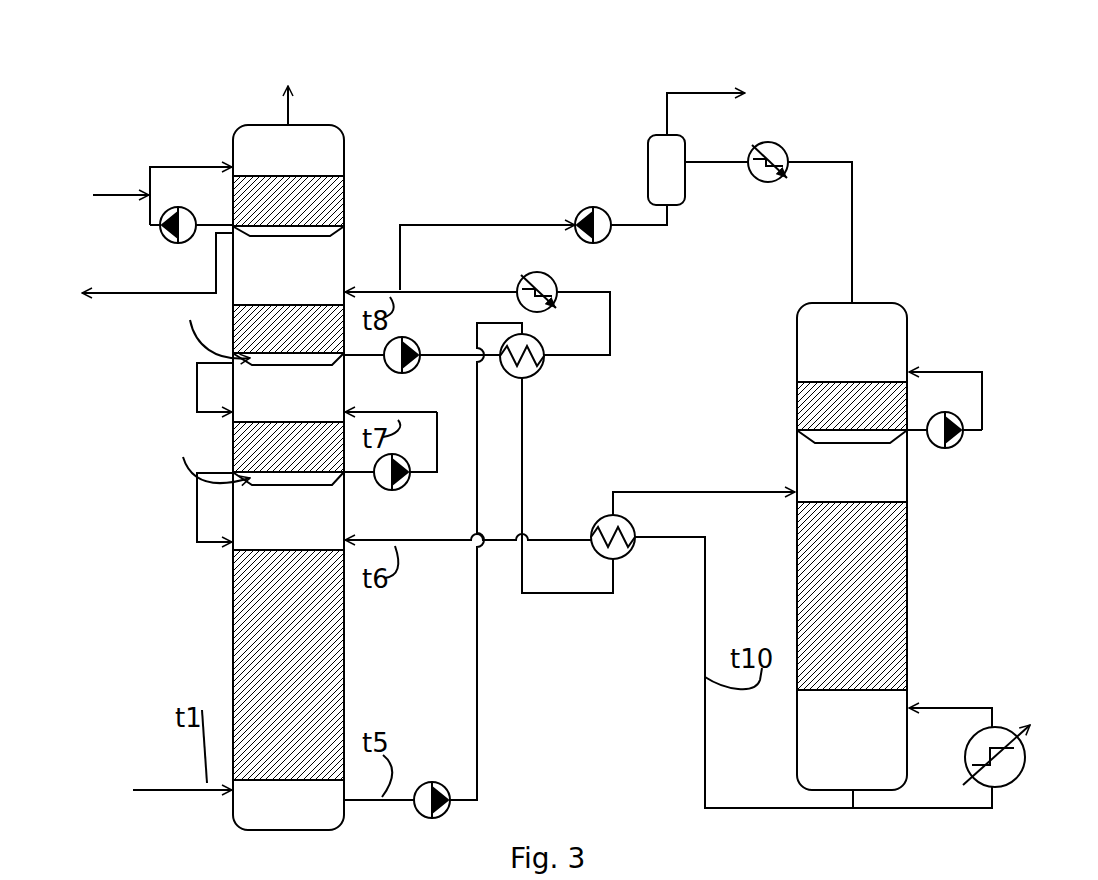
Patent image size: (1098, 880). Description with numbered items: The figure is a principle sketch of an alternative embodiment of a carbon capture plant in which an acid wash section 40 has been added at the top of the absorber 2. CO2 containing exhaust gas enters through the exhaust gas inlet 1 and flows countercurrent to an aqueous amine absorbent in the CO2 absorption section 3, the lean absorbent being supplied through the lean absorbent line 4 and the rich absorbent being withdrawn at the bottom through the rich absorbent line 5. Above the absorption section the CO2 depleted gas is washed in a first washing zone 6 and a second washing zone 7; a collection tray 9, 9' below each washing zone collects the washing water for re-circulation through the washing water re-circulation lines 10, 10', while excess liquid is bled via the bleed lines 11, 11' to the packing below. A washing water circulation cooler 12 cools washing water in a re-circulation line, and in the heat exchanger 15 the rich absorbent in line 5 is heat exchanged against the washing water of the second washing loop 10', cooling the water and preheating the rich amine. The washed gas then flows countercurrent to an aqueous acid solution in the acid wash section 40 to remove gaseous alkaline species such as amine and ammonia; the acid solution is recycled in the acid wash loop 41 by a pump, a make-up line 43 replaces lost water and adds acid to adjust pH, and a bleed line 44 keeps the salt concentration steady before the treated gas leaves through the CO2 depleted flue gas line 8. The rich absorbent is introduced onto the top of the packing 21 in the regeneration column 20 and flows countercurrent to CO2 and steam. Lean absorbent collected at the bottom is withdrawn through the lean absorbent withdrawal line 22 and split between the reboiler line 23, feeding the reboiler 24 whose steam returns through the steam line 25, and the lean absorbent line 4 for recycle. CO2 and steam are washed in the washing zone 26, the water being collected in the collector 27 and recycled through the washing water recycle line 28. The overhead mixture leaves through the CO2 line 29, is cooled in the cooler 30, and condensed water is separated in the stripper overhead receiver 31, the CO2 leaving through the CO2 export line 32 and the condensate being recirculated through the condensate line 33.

The exhaust gas inlet 1 is at (167, 790).
The absorber 2 is at (150, 640).
The CO2 absorption section 3 is at (288, 665).
The lean absorbent line 4 is at (447, 550).
The rich absorbent line 5 is at (478, 725).
The washing zone 6 is at (288, 453).
The washing zone 7 is at (288, 335).
The CO2 depleted flue gas line 8 is at (285, 105).
The collection tray 9 is at (213, 457).
The collection tray 9' is at (211, 332).
The washing water re-circulation line 10 is at (474, 470).
The washing water re-circulation line 10' is at (516, 332).
The bleed line 11 is at (460, 555).
The bleed line 11' is at (176, 384).
The washing water circulation cooler 12 is at (565, 245).
The heat exchanger 15 is at (528, 376).
The regeneration column 20 is at (973, 553).
The packing 21 is at (852, 596).
The lean absorbent withdrawal line 22 is at (850, 800).
The reboiler line 23 is at (968, 812).
The reboiler 24 is at (998, 745).
The steam line 25 is at (940, 707).
The washing zone 26 is at (852, 406).
The collector 27 is at (795, 452).
The washing water recycle line 28 is at (988, 374).
The CO2 line 29 is at (858, 254).
The cooler 30 is at (790, 150).
The stripper overhead receiver 31 is at (662, 163).
The CO2 export line 32 is at (718, 104).
The condensate line 33 is at (505, 222).
The acid wash section 40 is at (288, 206).
The acid wash loop 41 is at (148, 223).
The make-up line 43 is at (108, 200).
The bleed line 44 is at (108, 296).